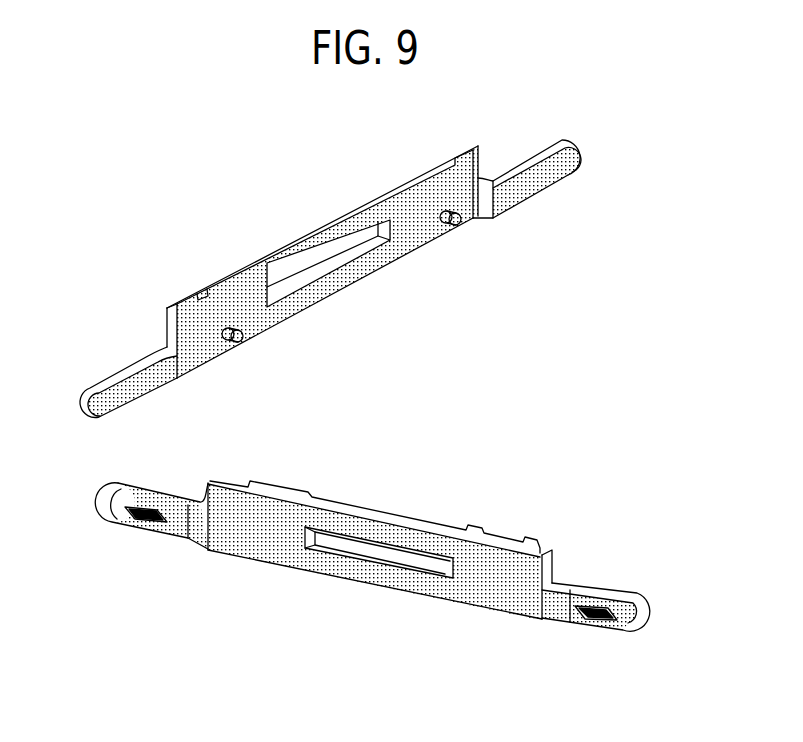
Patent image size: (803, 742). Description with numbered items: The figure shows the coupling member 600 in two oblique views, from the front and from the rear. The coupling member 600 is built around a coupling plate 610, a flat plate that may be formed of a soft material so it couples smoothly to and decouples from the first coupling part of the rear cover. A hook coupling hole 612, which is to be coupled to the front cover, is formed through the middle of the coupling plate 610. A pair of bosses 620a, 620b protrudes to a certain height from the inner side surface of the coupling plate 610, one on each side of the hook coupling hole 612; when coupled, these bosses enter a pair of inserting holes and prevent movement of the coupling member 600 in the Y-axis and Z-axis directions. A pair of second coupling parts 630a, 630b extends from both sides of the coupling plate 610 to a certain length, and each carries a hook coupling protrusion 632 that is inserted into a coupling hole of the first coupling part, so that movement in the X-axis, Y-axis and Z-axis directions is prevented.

The coupling member 600 is at (141, 218).
The coupling plate 610 is at (320, 230).
The hook coupling hole 612 is at (324, 266).
The boss 620a is at (459, 222).
The boss 620b is at (242, 338).
The second coupling part 630a is at (540, 183).
The second coupling part 630b is at (150, 393).
The hook coupling protrusion 632 is at (132, 516).